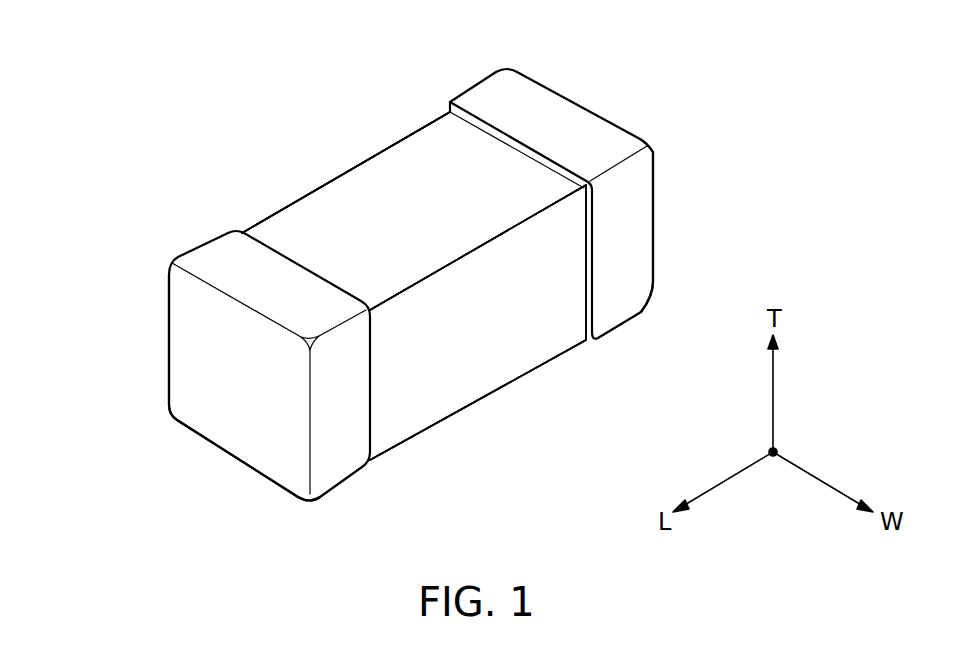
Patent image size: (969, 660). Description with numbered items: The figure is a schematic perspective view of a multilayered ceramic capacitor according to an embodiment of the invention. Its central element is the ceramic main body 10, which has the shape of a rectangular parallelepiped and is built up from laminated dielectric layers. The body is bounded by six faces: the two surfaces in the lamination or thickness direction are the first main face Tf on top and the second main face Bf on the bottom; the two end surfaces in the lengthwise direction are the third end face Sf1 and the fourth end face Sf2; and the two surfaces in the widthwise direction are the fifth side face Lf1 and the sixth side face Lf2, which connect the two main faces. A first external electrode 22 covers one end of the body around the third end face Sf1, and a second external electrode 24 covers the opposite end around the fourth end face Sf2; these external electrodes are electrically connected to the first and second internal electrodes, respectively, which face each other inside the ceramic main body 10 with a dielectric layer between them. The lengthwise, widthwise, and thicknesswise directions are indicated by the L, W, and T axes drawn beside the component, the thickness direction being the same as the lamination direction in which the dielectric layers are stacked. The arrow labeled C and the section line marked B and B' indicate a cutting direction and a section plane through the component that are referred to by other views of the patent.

The ceramic main body 10 is at (350, 180).
The first external electrode 22 is at (205, 250).
The second external electrode 24 is at (478, 88).
The first main face Tf is at (297, 212).
The second main face Bf is at (467, 392).
The fifth side face Lf1 is at (532, 348).
The sixth side face Lf2 is at (432, 138).
The third end face Sf1 is at (292, 477).
The fourth end face Sf2 is at (636, 137).
The center / cutting direction C is at (387, 222).
The section line B is at (127, 372).
The section line B' is at (612, 73).